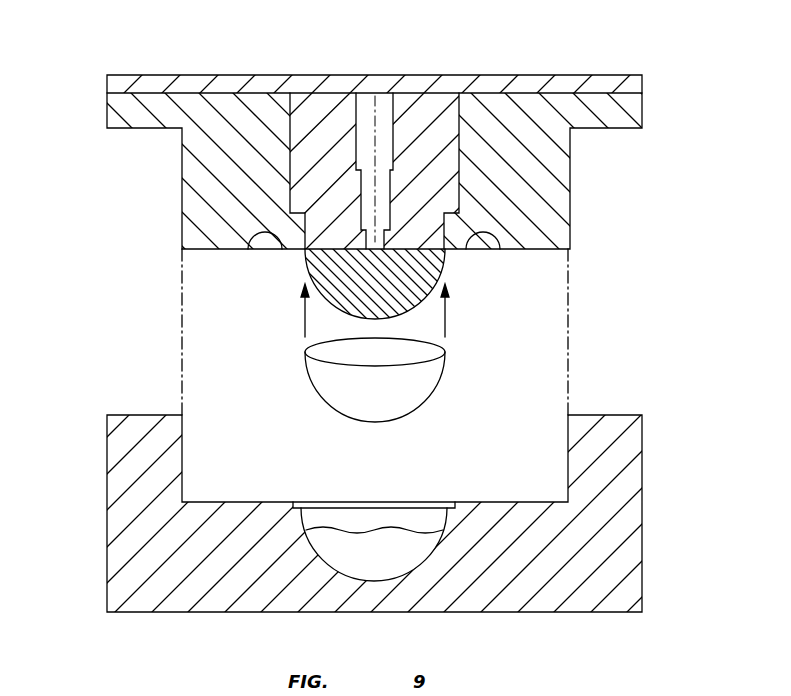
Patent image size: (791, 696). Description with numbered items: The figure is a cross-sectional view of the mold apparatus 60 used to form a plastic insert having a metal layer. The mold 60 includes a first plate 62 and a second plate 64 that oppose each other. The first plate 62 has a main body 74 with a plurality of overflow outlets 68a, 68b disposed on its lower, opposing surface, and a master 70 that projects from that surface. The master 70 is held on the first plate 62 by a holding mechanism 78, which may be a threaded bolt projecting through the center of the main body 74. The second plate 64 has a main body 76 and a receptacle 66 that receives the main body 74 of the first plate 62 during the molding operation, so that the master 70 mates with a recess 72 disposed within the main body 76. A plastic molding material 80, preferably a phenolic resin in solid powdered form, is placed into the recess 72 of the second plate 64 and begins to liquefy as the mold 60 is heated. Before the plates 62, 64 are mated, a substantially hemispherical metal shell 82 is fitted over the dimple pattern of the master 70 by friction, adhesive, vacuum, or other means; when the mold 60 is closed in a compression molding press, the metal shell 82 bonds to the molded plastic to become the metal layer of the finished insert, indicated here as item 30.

The mold apparatus 60 is at (563, 55).
The first plate 62 is at (571, 192).
The main body 74 is at (215, 186).
The holding mechanism 78 is at (387, 102).
The overflow outlet 68a is at (484, 251).
The overflow outlet 68b is at (264, 251).
The master 70 is at (442, 268).
The metal shell 82 is at (320, 391).
The receptacle 66 is at (503, 442).
The second plate 64 is at (642, 453).
The main body 76 is at (120, 548).
The recess 72 is at (365, 501).
The molded hemispherical article 30 is at (307, 547).
The plastic molding material 80 is at (427, 520).